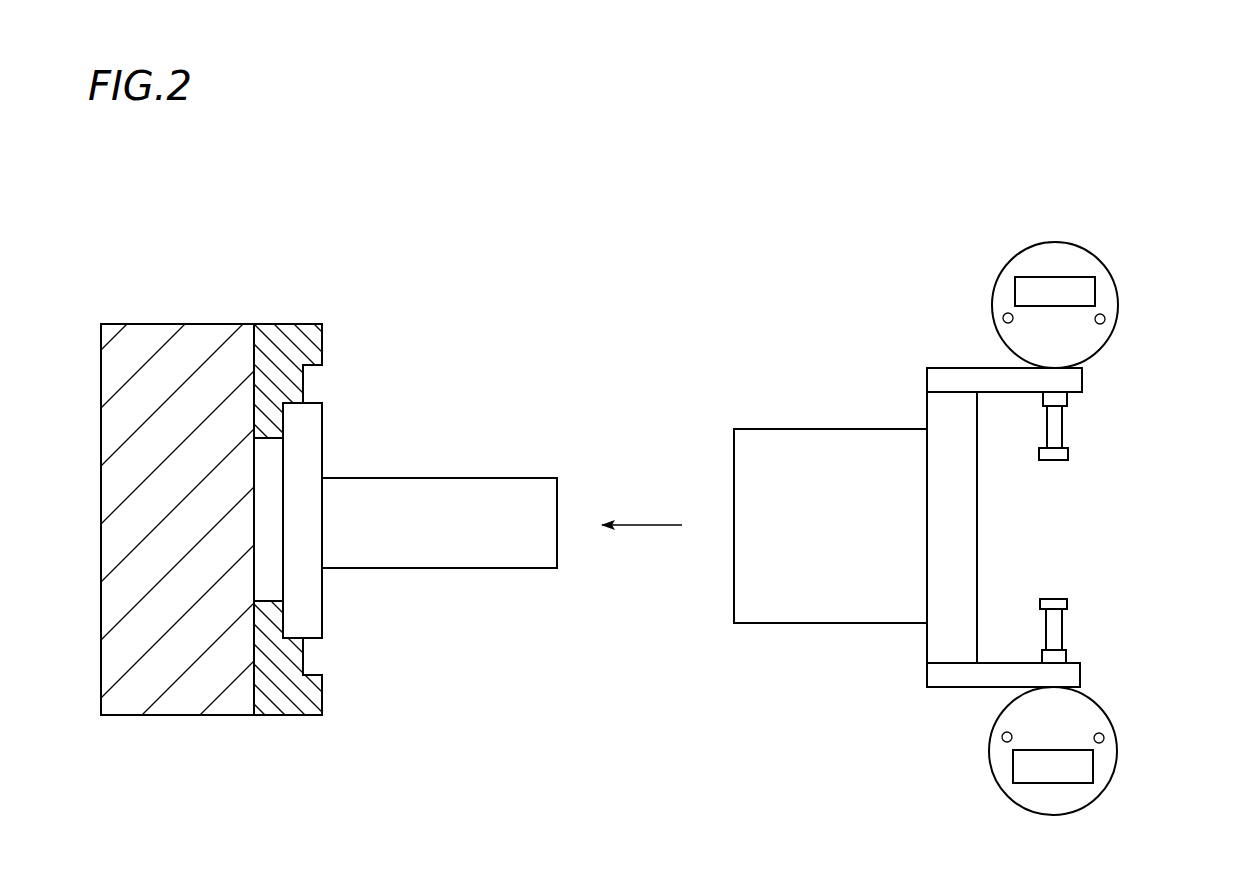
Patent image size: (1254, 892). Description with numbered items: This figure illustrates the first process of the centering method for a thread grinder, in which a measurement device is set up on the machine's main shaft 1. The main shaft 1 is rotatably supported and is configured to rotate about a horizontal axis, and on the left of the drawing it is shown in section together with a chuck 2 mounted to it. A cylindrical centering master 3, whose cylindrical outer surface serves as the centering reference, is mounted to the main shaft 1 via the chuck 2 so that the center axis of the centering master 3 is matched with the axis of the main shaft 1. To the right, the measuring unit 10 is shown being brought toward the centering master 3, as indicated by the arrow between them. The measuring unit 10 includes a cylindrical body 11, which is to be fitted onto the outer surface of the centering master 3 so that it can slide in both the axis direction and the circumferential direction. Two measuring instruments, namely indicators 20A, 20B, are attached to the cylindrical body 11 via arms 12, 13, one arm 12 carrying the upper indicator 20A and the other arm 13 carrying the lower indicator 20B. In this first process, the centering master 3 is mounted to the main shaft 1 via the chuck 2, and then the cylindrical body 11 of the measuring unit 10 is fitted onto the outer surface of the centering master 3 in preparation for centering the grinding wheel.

The main shaft 1 is at (166, 318).
The chuck 2 is at (279, 324).
The centering master 3 is at (437, 478).
The measuring unit 10 is at (976, 528).
The cylindrical body 11 is at (824, 623).
The arm 12 is at (955, 368).
The arm 13 is at (950, 687).
The measuring instrument 20A is at (1122, 306).
The measuring instrument 20B is at (1120, 751).